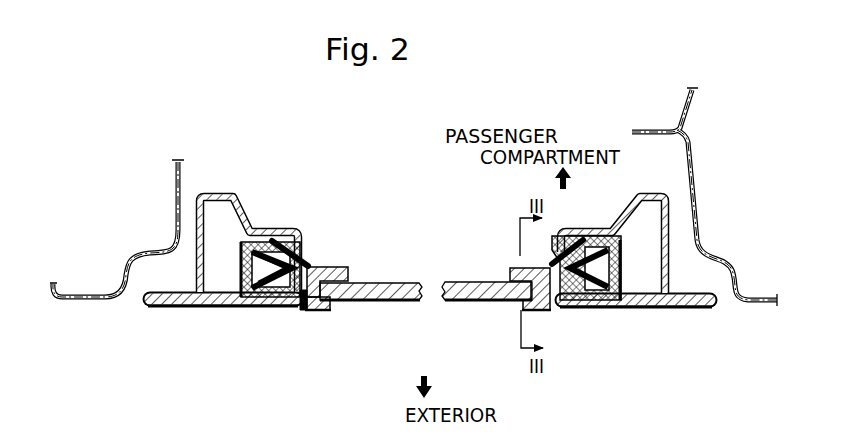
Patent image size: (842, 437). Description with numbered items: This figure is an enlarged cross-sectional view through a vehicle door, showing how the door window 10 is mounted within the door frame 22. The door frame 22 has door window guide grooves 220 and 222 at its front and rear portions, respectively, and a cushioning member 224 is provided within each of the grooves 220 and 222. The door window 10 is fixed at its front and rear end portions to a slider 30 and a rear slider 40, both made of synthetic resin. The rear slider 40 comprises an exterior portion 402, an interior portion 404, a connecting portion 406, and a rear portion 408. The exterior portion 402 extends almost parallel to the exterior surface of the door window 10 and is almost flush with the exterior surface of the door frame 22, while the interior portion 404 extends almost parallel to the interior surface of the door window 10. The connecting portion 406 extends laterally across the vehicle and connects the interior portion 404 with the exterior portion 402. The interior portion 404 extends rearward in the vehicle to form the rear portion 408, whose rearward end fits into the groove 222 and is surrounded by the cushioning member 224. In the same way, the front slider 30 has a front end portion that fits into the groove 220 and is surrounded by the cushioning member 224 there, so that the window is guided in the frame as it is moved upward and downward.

The door window 10 is at (413, 302).
The door frame 22 is at (225, 310).
The slider 30 is at (506, 272).
The rear slider 40 is at (351, 307).
The door window guide groove 220 is at (553, 254).
The door window guide groove 222 is at (300, 251).
The cushioning member 224 is at (258, 310).
The exterior portion 402 is at (321, 313).
The interior portion 404 is at (334, 268).
The connecting portion 406 is at (301, 313).
The rear portion 408 is at (267, 262).